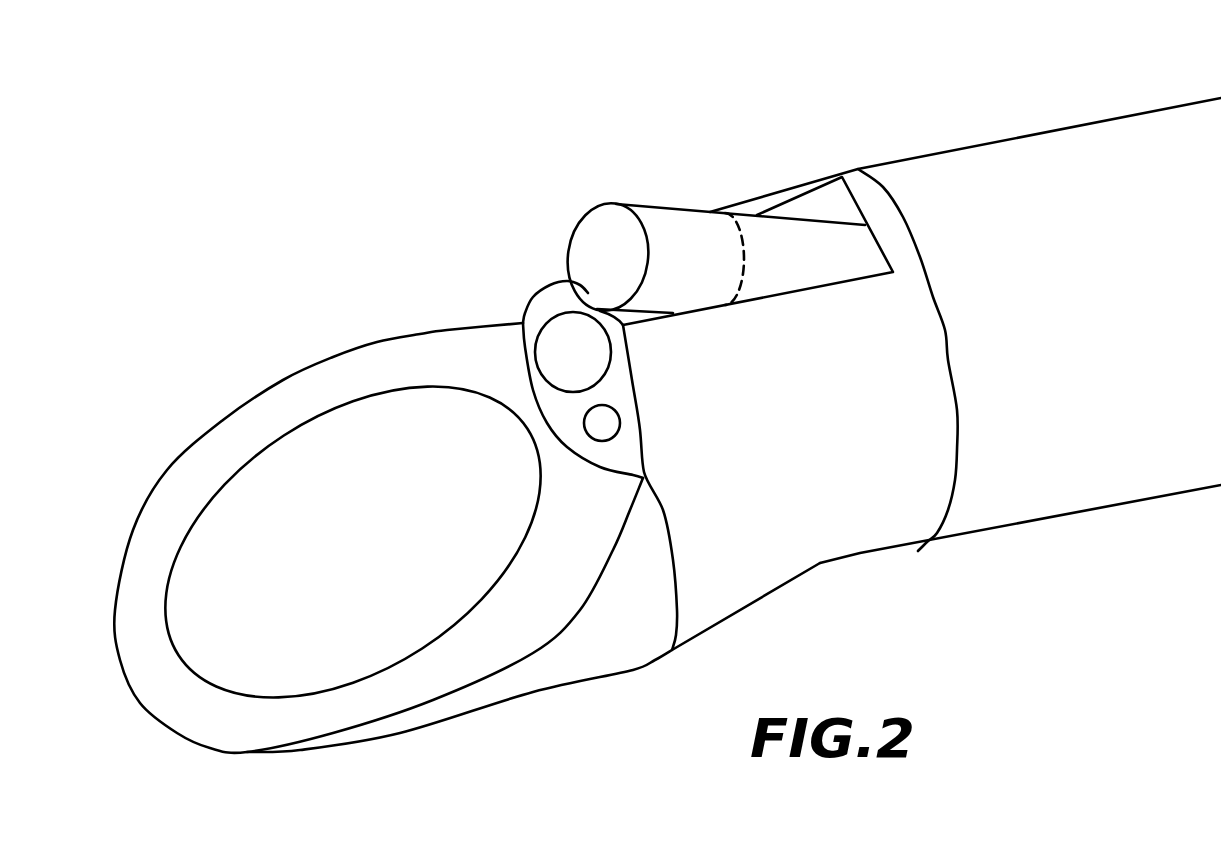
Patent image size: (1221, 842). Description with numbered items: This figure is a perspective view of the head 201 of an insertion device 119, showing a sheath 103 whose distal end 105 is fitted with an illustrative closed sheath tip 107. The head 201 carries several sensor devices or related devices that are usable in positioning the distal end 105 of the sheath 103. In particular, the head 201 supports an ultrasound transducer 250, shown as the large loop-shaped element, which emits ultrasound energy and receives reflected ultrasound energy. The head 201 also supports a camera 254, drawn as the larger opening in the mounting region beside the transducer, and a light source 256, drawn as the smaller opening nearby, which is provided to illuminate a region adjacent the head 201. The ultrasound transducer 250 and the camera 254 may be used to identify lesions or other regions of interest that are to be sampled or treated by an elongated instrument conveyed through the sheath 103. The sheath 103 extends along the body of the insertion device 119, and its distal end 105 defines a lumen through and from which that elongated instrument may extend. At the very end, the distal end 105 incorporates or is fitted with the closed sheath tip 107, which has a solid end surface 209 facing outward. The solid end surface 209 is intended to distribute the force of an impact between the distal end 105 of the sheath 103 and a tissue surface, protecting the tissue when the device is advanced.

The head 201 is at (206, 170).
The insertion device 119 is at (1085, 142).
The sheath 103 is at (750, 223).
The distal end 105 is at (696, 227).
The closed sheath tip 107 is at (682, 235).
The solid end surface 209 is at (667, 222).
The ultrasound transducer 250 is at (240, 510).
The camera 254 is at (547, 353).
The light source 256 is at (610, 420).